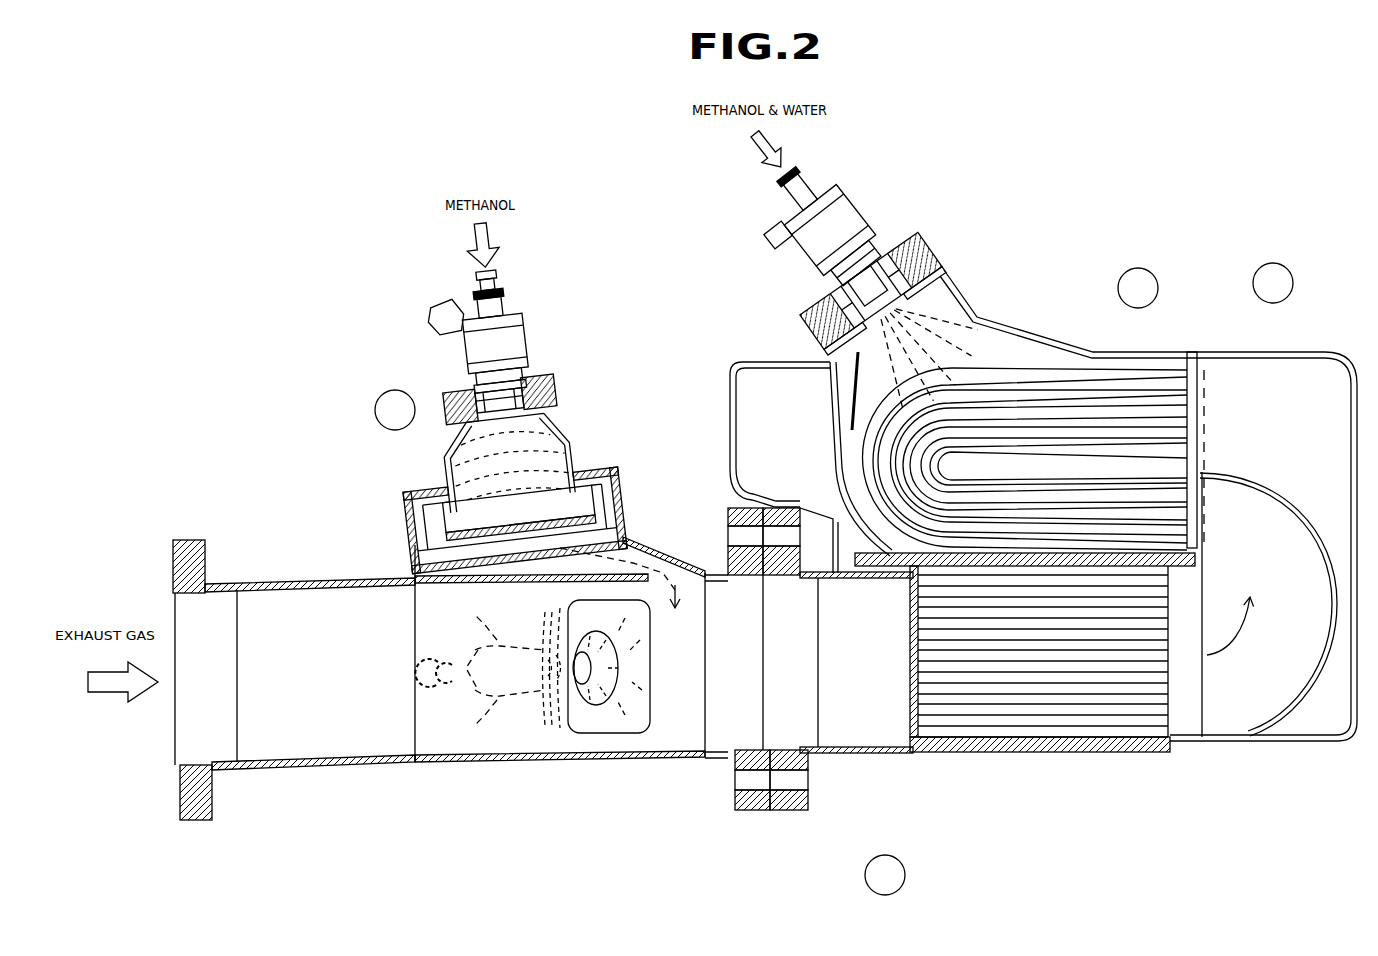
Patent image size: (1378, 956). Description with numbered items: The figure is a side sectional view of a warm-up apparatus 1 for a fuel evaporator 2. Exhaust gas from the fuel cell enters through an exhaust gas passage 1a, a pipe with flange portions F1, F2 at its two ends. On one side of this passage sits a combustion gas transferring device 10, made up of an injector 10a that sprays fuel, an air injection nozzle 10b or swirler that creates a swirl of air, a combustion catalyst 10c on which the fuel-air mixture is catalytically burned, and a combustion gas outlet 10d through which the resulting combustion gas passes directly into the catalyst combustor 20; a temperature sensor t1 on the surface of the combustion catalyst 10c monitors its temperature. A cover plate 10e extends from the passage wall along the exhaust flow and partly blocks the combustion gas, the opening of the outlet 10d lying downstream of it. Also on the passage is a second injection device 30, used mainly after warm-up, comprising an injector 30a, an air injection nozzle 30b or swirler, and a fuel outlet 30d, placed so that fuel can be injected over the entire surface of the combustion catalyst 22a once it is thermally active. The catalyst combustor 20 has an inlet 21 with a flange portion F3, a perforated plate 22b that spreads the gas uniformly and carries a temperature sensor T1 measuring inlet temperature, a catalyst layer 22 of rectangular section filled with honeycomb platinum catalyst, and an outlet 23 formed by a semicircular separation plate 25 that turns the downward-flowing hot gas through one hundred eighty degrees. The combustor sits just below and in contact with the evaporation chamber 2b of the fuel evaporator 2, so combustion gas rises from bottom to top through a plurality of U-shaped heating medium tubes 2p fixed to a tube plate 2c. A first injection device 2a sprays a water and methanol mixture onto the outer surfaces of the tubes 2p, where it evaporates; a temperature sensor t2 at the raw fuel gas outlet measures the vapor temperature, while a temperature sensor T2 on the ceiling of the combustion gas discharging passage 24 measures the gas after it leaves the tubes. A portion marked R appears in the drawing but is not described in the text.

The warm-up apparatus 1 is at (355, 840).
The exhaust gas passage 1a is at (465, 770).
The fuel evaporator 2 is at (1034, 427).
The first injection device 2a is at (840, 230).
The evaporation chamber 2b is at (998, 342).
The tube plate 2c is at (1190, 352).
The U-shaped heating medium tubes 2p is at (995, 420).
The combustion gas transferring device 10 is at (430, 350).
The injector 10a is at (528, 343).
The air injection nozzle 10b is at (556, 398).
The combustion catalyst 10c is at (625, 504).
The combustion gas outlet 10d is at (699, 598).
The cover plate 10e is at (457, 579).
The catalyst combustor 20 is at (1050, 667).
The inlet 21 is at (842, 742).
The catalyst layer 22 is at (1025, 693).
The combustion catalyst 22a is at (1005, 727).
The perforated plate 22b is at (916, 752).
The outlet 23 is at (1268, 692).
The combustion gas discharging passage 24 is at (790, 378).
The semicircular separation plate 25 is at (1290, 502).
The second injection device 30 is at (532, 731).
The injector 30a is at (545, 700).
The air injection nozzle 30b is at (548, 640).
The fuel outlet 30d is at (620, 735).
The flange portion F1 is at (192, 540).
The flange portion F2 is at (740, 508).
The flange portion F3 is at (778, 508).
The curved guide wall R is at (853, 447).
The temperature sensor t1 is at (472, 508).
The temperature sensor t2 is at (1120, 372).
The temperature sensor T1 is at (913, 678).
The temperature sensor T2 is at (1253, 380).